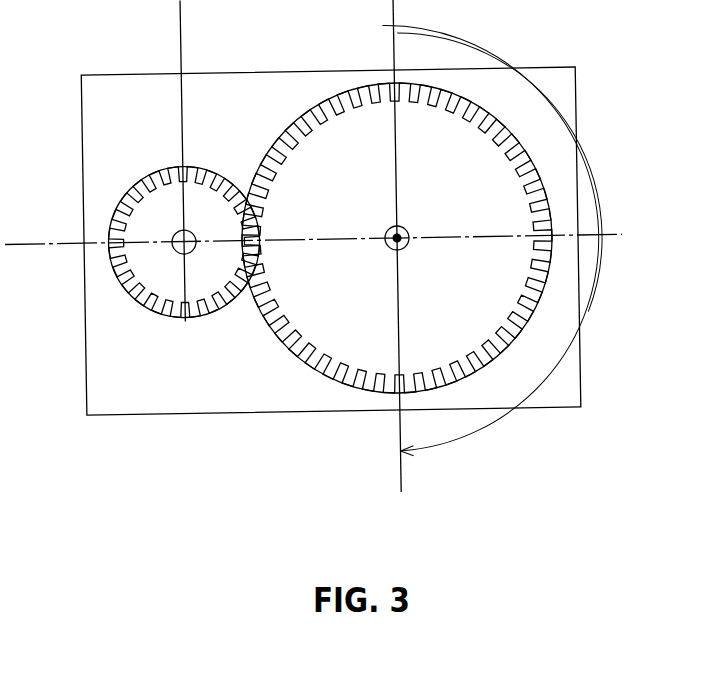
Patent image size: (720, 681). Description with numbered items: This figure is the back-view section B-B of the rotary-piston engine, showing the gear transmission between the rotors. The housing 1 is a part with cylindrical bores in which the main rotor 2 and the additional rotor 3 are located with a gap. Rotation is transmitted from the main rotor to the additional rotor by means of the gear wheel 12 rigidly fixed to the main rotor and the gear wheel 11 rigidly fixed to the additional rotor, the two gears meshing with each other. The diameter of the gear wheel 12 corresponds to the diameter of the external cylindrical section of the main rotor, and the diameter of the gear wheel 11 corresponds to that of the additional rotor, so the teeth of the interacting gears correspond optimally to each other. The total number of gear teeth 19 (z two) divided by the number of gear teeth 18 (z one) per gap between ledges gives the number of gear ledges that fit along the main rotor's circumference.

The housing 1 is at (128, 118).
The main rotor 2 is at (149, 211).
The gear wheel rigidly fixed to the main rotor 12 is at (168, 212).
The additional rotor 3 is at (397, 238).
The gear wheel rigidly fixed to the additional rotor 11 is at (433, 288).
The gear teeth z1 18 is at (512, 239).
The total gear teeth z2 19 is at (353, 390).